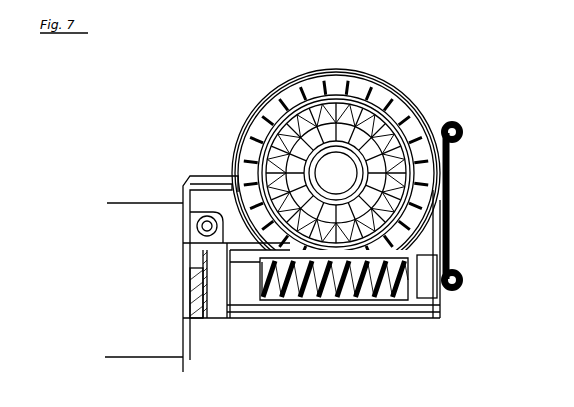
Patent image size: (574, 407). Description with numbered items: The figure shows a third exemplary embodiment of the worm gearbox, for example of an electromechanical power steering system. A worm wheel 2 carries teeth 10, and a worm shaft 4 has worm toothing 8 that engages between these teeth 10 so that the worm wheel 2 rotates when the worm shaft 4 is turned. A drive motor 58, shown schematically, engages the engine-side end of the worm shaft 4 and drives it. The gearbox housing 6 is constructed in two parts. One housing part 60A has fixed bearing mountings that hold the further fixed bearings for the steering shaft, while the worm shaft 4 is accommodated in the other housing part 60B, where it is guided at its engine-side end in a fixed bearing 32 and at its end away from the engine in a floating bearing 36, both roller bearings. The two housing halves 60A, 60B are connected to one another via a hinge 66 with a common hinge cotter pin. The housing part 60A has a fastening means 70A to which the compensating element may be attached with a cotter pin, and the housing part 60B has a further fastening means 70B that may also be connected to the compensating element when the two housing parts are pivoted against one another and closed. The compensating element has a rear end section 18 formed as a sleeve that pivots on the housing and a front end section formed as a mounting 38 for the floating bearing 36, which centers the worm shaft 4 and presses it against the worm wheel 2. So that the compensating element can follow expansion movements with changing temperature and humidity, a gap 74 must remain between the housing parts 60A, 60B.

The worm wheel 2 is at (336, 103).
The worm shaft 4 is at (318, 292).
The gearbox housing 6 is at (328, 156).
The worm toothing 8 is at (282, 292).
The teeth 10 is at (300, 102).
The rear end section 18 is at (472, 208).
The fixed bearing 32 is at (215, 305).
The floating bearing 36 is at (426, 299).
The mounting 38 is at (197, 273).
The drive motor 58 is at (123, 225).
The housing part 60A is at (405, 97).
The housing part 60B is at (364, 303).
The hinge 66 is at (199, 220).
The fastening means 70A is at (459, 122).
The fastening means 70B is at (457, 291).
The gap 74 is at (450, 243).